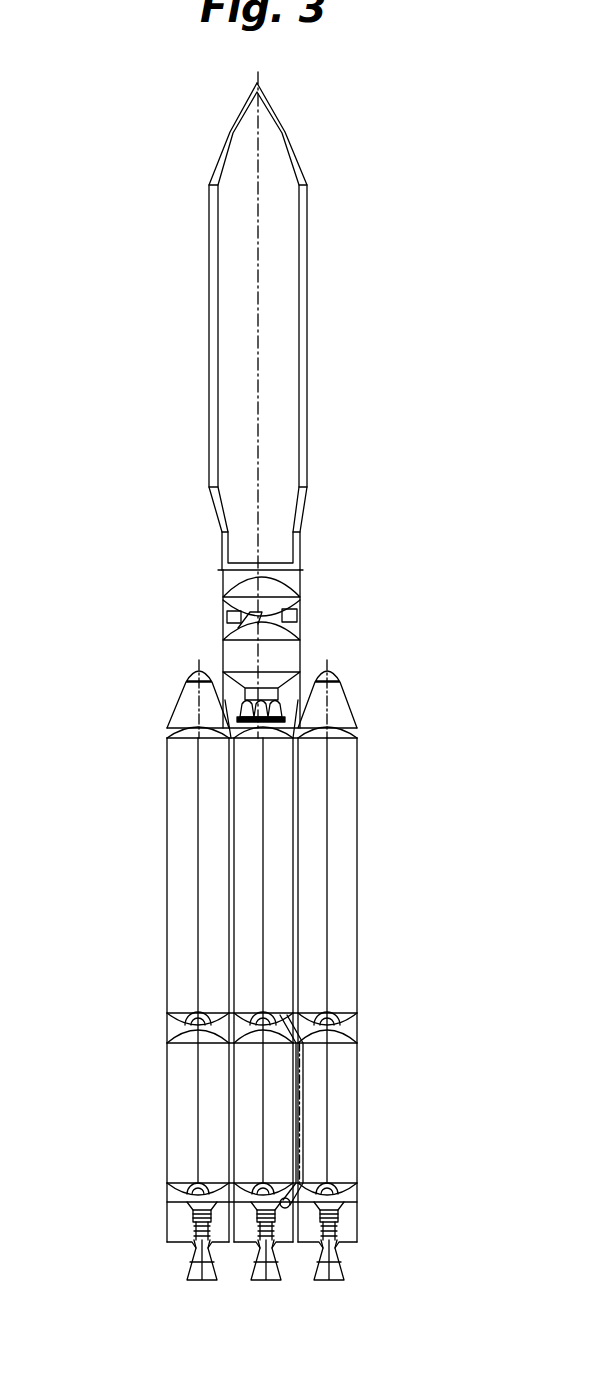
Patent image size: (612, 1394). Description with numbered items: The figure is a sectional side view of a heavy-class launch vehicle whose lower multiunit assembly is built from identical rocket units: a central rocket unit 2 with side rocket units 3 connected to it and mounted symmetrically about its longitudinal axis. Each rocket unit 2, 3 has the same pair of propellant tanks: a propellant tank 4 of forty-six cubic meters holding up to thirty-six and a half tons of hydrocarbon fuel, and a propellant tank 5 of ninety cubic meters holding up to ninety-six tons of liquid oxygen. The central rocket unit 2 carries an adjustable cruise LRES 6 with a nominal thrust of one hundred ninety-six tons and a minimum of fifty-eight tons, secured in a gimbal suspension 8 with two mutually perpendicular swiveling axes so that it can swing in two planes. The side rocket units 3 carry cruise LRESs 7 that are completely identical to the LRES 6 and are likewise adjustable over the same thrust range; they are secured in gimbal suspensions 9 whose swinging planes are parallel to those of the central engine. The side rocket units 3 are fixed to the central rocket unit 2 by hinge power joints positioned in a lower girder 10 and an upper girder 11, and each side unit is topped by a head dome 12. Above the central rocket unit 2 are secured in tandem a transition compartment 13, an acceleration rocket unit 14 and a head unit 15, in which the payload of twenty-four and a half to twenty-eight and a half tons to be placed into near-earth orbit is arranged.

The central rocket unit 2 is at (249, 997).
The side rocket unit 3 is at (167, 870).
The propellant tank 4 is at (282, 1110).
The propellant tank 5 is at (345, 800).
The cruise LRES 6 is at (258, 1278).
The cruise LRES 7 is at (195, 1276).
The gimbal suspension 8 is at (256, 1232).
The gimbal suspension 9 is at (200, 1212).
The lower girder 10 is at (296, 1210).
The upper girder 11 is at (222, 727).
The head dome 12 is at (347, 702).
The transition compartment 13 is at (300, 675).
The acceleration rocket unit 14 is at (226, 640).
The head unit 15 is at (308, 463).